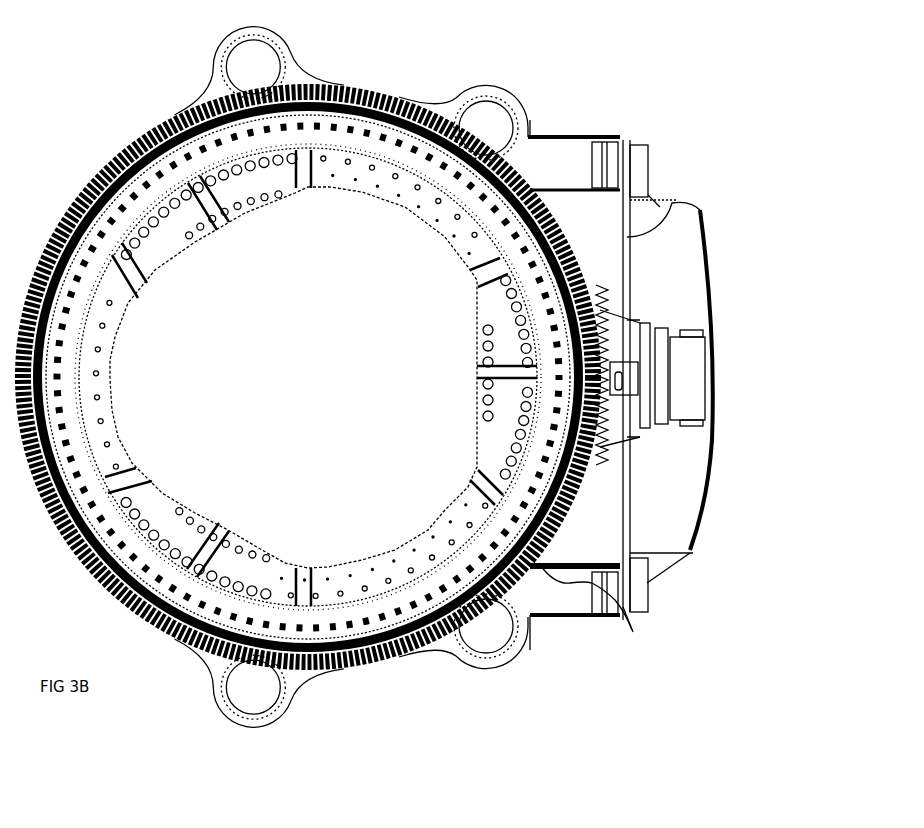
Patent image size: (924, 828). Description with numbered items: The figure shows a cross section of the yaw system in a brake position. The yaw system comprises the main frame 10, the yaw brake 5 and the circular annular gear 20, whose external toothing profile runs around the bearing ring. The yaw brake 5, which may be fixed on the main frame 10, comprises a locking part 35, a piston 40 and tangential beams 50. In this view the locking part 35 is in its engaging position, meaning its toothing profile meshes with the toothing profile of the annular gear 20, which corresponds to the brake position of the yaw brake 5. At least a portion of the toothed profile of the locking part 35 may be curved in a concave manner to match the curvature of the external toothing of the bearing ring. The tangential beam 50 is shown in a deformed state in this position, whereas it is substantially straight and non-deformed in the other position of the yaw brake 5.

The annular gear 20 is at (180, 117).
The tangential beam 50 is at (667, 202).
The piston 40 is at (697, 375).
The yaw brake 5 is at (681, 438).
The locking part 35 is at (613, 417).
The main frame 10 is at (693, 555).